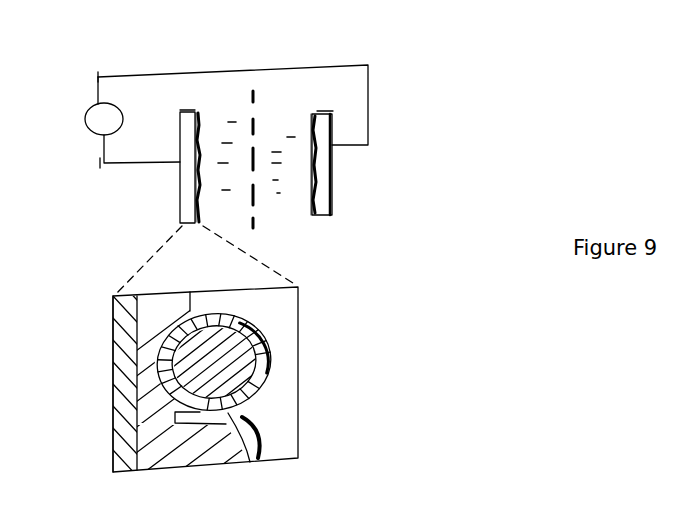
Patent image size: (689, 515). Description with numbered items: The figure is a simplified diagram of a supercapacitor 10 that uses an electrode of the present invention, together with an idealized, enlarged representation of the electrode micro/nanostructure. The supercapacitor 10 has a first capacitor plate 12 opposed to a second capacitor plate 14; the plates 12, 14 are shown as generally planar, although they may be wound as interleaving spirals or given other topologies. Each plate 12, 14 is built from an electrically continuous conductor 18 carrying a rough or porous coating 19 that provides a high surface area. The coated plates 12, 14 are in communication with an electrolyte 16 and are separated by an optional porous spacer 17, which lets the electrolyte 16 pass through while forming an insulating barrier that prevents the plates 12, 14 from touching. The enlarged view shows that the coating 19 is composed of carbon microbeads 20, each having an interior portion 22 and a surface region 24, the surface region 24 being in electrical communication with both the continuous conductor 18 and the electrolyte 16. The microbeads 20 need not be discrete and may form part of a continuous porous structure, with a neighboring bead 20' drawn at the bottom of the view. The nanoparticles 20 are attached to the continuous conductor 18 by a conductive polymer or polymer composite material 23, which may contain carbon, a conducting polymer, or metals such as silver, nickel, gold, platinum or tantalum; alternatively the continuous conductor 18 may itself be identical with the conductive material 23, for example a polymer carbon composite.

The supercapacitor 10 is at (416, 62).
The first capacitor plate 12 is at (155, 190).
The second capacitor plate 14 is at (355, 172).
The electrolyte 16 is at (256, 96).
The porous spacer 17 is at (276, 137).
The electrically continuous conductor 18 is at (180, 116).
The coating 19 is at (207, 114).
The carbon microbead 20 is at (307, 423).
The secondary gap 20' is at (264, 456).
The interior portion 22 is at (268, 325).
The conductive polymer or polymer composite material 23 is at (110, 312).
The surface region 24 is at (272, 367).